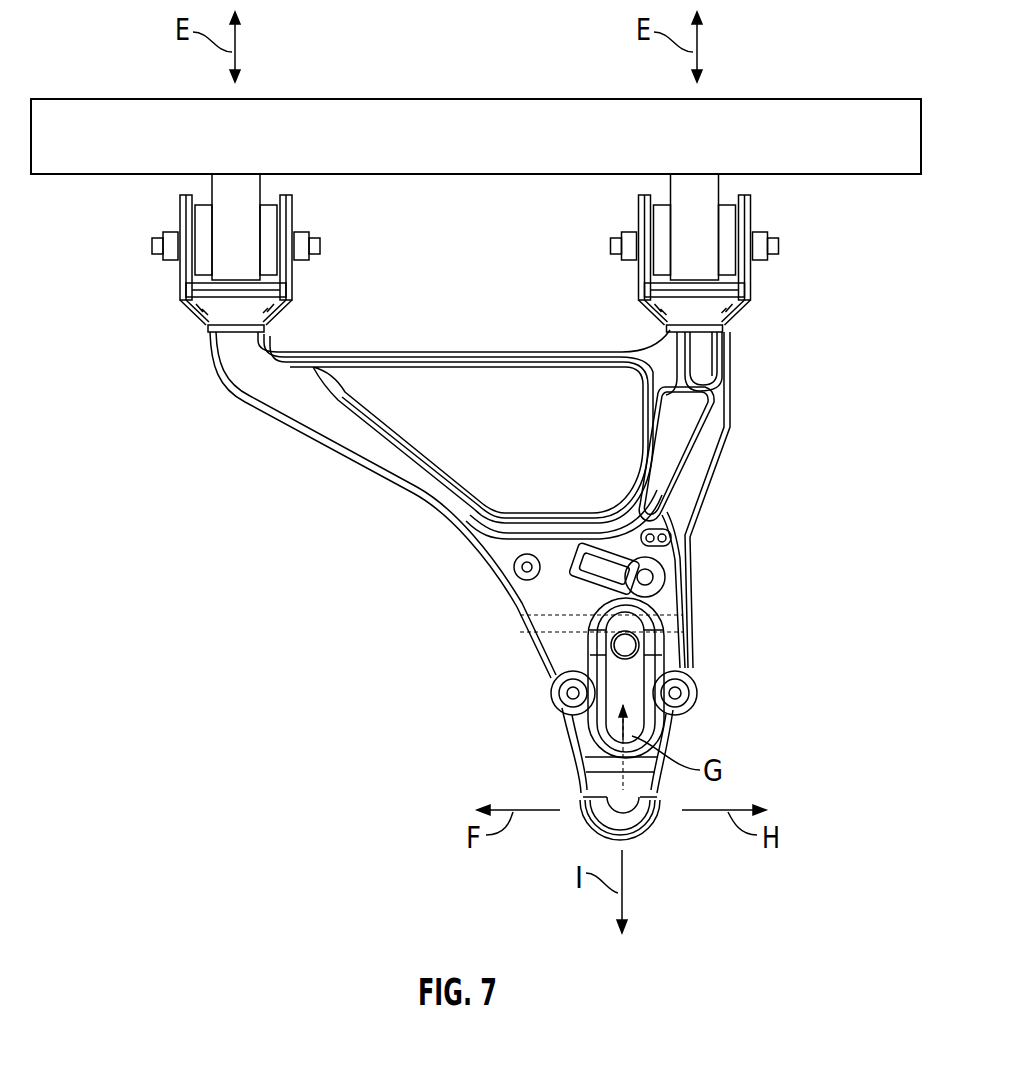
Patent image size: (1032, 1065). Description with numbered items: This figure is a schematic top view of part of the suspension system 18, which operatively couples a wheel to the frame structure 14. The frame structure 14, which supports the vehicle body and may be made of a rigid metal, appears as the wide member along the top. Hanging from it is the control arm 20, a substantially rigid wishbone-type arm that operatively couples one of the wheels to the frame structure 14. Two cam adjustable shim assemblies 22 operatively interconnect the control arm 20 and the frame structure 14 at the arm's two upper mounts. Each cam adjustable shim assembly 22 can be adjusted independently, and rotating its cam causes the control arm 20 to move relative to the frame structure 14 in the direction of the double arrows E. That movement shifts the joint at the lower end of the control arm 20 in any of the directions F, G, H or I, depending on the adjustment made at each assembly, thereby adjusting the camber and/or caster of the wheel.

The frame structure 14 is at (86, 99).
The suspension system 18 is at (352, 592).
The control arm 20 is at (703, 497).
The cam adjustable shim assembly 22 is at (158, 276).